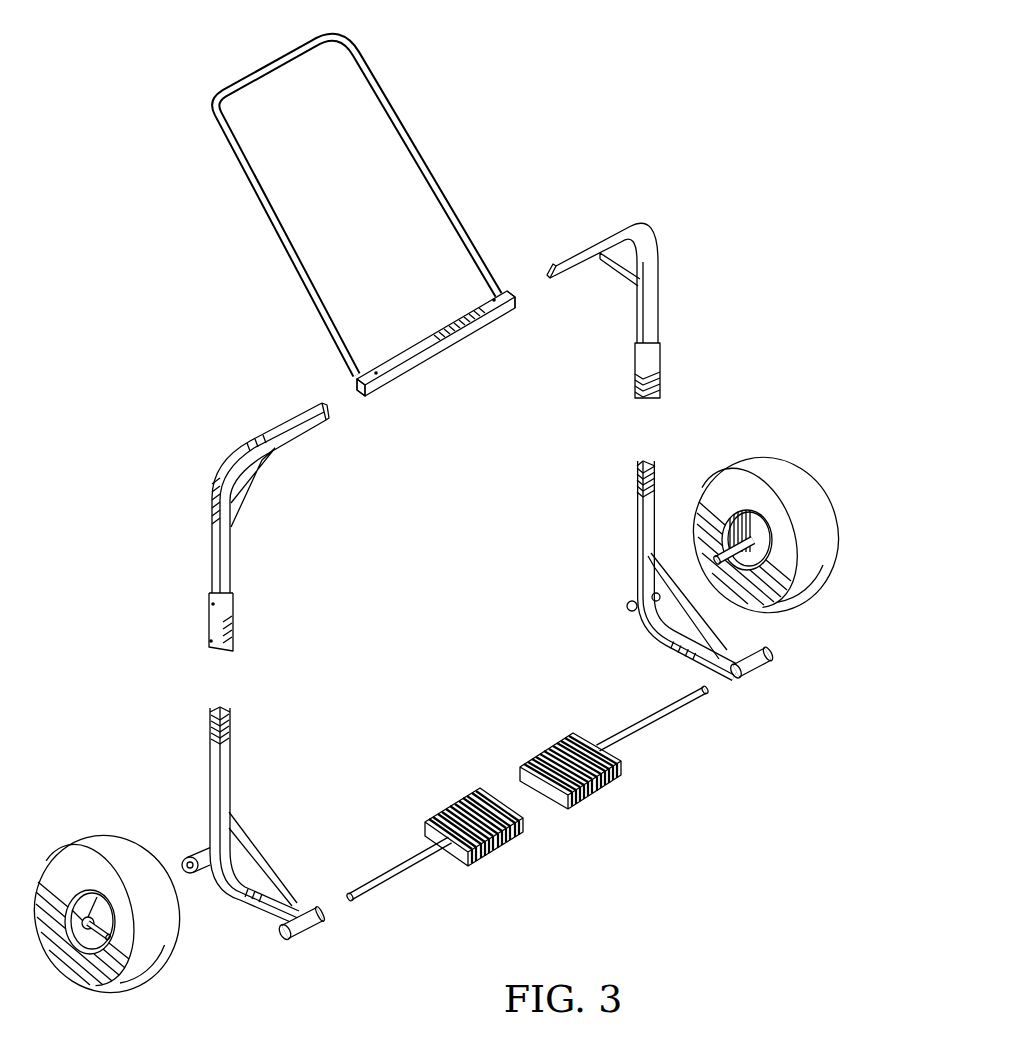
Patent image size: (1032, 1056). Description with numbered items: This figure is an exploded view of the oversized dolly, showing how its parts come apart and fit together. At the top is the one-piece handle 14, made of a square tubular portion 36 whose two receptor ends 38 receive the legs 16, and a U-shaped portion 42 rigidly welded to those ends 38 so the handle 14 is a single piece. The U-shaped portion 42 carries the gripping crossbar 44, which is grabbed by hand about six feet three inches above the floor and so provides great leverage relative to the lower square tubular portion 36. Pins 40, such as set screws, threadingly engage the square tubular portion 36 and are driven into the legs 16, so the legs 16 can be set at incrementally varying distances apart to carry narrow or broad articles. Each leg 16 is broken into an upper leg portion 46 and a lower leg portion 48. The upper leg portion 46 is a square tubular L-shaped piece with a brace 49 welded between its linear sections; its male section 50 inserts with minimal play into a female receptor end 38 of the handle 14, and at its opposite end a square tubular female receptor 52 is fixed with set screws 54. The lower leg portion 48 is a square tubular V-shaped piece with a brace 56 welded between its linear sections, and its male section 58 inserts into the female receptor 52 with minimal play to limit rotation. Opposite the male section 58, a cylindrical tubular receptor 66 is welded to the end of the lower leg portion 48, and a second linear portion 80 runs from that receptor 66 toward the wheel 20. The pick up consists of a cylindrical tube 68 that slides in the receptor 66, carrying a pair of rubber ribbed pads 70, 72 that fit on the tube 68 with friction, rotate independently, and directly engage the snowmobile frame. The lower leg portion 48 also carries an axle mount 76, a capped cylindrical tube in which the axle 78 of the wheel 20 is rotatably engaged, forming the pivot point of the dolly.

The handle 14 is at (441, 188).
The legs 16 is at (690, 356).
The wheels 20 is at (436, 711).
The square tubular portion 36 is at (440, 352).
The receptor ends 38 is at (515, 311).
The pins 40 is at (375, 371).
The U-shaped portion 42 is at (389, 100).
The crossbar 44 is at (263, 63).
The upper leg portion 46 is at (435, 424).
The lower leg portion 48 is at (480, 712).
The brace 49 is at (258, 478).
The male section 50 is at (566, 258).
The female receptor 52 is at (634, 370).
The set screws 54 is at (210, 641).
The brace 56 is at (259, 846).
The male section 58 is at (231, 720).
The receptor 66 is at (764, 673).
The cylindrical tube 68 is at (383, 881).
The ribbed pad 70 is at (516, 766).
The ribbed pad 72 is at (467, 800).
The axle mount 76 is at (626, 605).
The axle 78 is at (742, 575).
The second linear portion 80 is at (306, 905).